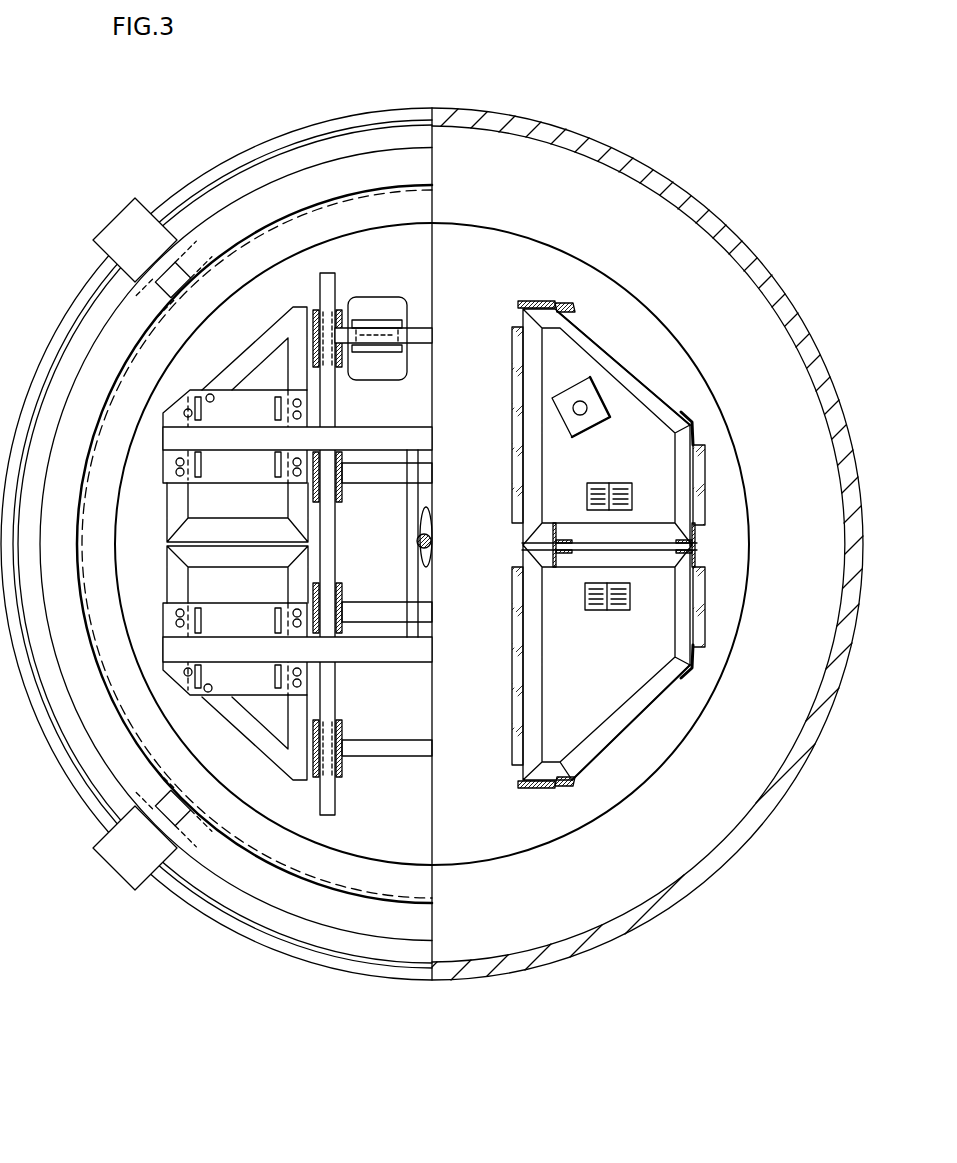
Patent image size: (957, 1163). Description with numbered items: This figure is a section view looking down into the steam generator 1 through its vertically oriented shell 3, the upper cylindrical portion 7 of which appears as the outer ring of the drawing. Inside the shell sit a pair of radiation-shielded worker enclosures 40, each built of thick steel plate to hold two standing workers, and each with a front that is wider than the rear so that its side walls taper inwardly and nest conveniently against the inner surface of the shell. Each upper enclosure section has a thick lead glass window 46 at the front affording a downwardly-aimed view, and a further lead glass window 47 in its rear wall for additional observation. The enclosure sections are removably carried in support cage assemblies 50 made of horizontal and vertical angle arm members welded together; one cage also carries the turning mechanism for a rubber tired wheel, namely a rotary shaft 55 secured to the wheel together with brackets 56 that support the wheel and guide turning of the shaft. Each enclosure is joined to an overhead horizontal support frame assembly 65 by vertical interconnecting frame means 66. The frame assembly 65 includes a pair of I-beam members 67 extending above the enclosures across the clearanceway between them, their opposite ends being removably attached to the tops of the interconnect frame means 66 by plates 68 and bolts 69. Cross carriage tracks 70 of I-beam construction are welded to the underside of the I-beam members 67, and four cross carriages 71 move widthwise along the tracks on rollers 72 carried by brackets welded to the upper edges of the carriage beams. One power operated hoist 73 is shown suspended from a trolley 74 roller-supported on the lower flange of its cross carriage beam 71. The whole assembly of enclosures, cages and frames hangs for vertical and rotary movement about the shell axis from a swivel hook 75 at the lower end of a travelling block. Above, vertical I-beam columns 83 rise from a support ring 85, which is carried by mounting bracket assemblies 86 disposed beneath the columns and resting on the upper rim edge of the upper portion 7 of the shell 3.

The steam generator 1 is at (728, 861).
The shell 3 is at (533, 968).
The upper cylindrical portion 7 is at (622, 928).
The radiation-shielded worker enclosure 40 is at (626, 456).
The lead glass window 46 is at (512, 436).
The lead glass window 47 is at (700, 478).
The support cage assembly 50 is at (556, 302).
The rotary shaft 55 is at (565, 391).
The bracket 56 is at (582, 415).
The horizontal support frame assembly 65 is at (168, 466).
The vertical interconnecting frame means 66 is at (264, 348).
The I-beam member 67 is at (232, 436).
The plate 68 is at (175, 402).
The bolt 69 is at (210, 392).
The cross carriage track 70 is at (334, 283).
The cross carriage 71 is at (430, 338).
The roller 72 is at (318, 345).
The power operated hoist 73 is at (386, 318).
The trolley 74 is at (380, 352).
The swivel hook 75 is at (432, 530).
The vertical I-beam column 83 is at (180, 262).
The support ring 85 is at (108, 338).
The mounting bracket assembly 86 is at (126, 217).